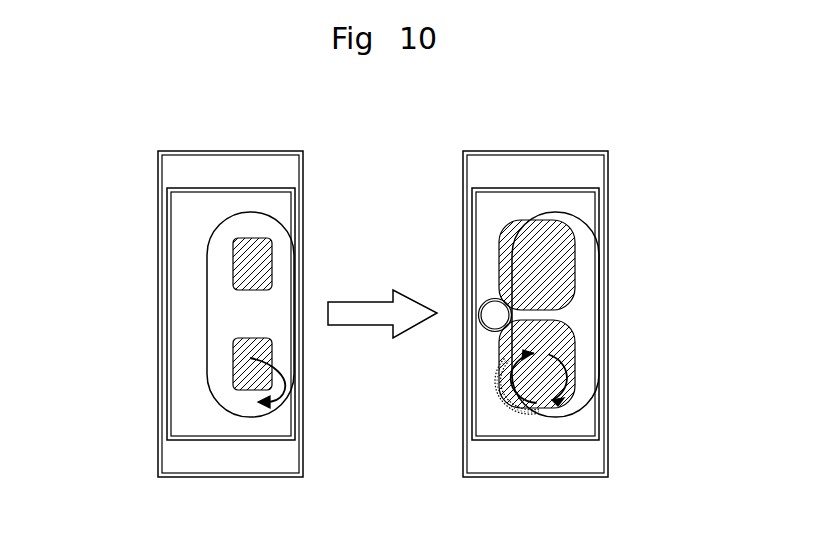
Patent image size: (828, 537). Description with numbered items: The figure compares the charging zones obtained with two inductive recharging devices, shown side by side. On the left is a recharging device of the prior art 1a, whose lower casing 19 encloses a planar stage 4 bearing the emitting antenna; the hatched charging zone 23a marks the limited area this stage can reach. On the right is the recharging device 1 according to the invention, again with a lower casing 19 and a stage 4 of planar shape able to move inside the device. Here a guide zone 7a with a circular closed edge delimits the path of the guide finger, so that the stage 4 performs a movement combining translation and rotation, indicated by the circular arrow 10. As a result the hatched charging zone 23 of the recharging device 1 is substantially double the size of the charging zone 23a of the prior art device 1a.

The recharging device 1 is at (532, 148).
The recharging device of the prior art 1a is at (158, 179).
The stage 4 is at (217, 263).
The guide zone 7a is at (493, 330).
The rotating direction 10 is at (507, 402).
The lower casing 19 is at (266, 184).
The charging zone 23 is at (562, 277).
The charging zone of the prior art 23a is at (248, 277).